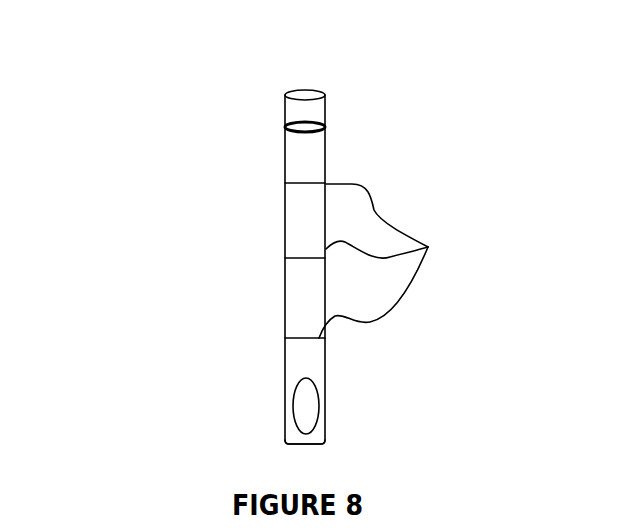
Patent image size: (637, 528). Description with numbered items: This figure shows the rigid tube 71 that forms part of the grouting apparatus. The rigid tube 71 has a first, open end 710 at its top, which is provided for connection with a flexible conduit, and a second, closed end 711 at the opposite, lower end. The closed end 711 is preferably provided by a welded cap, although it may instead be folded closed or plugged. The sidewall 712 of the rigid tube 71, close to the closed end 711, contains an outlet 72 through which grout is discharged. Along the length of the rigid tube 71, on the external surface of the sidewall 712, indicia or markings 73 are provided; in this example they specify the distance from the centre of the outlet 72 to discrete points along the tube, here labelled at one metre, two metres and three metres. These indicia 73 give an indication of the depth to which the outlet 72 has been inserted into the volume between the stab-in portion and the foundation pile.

The rigid tube 71 is at (260, 253).
The first, open end 710 is at (312, 91).
The second, closed end 711 is at (303, 446).
The sidewall 712 is at (285, 290).
The indicia or markings 73 is at (391, 261).
The outlet 72 is at (311, 402).